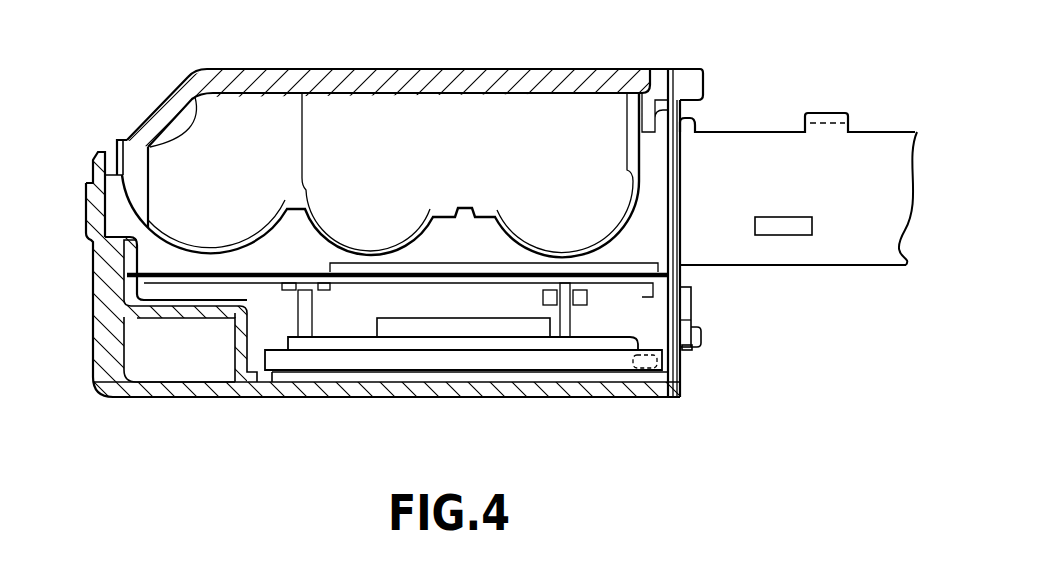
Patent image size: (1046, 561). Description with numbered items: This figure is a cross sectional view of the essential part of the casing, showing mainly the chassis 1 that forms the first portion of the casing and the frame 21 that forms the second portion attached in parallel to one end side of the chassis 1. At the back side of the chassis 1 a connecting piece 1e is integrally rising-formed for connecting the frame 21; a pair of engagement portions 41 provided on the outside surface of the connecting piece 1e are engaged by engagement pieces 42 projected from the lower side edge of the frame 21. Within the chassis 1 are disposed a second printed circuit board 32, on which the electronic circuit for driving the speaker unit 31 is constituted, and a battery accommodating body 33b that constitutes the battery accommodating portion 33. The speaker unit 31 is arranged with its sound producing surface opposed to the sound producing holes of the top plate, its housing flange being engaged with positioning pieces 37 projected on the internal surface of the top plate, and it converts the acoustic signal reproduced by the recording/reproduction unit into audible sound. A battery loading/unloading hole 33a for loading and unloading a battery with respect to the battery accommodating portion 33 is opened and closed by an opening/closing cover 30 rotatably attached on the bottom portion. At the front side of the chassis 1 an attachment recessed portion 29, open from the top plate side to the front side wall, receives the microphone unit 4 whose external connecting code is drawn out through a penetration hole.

The chassis 1 is at (436, 397).
The connecting piece 1e is at (681, 366).
The microphone unit 4 is at (169, 363).
The frame 21 is at (836, 256).
The attachment recessed portion 29 is at (238, 360).
The opening/closing cover 30 is at (371, 68).
The speaker unit 31 is at (569, 347).
The second printed circuit board 32 is at (641, 291).
The battery accommodating portion 33 is at (435, 125).
The battery loading/unloading hole 33a is at (181, 150).
The battery accommodating body 33b is at (163, 250).
The positioning piece 37 is at (637, 363).
The engagement portion 41 is at (701, 337).
The engagement piece 42 is at (694, 349).